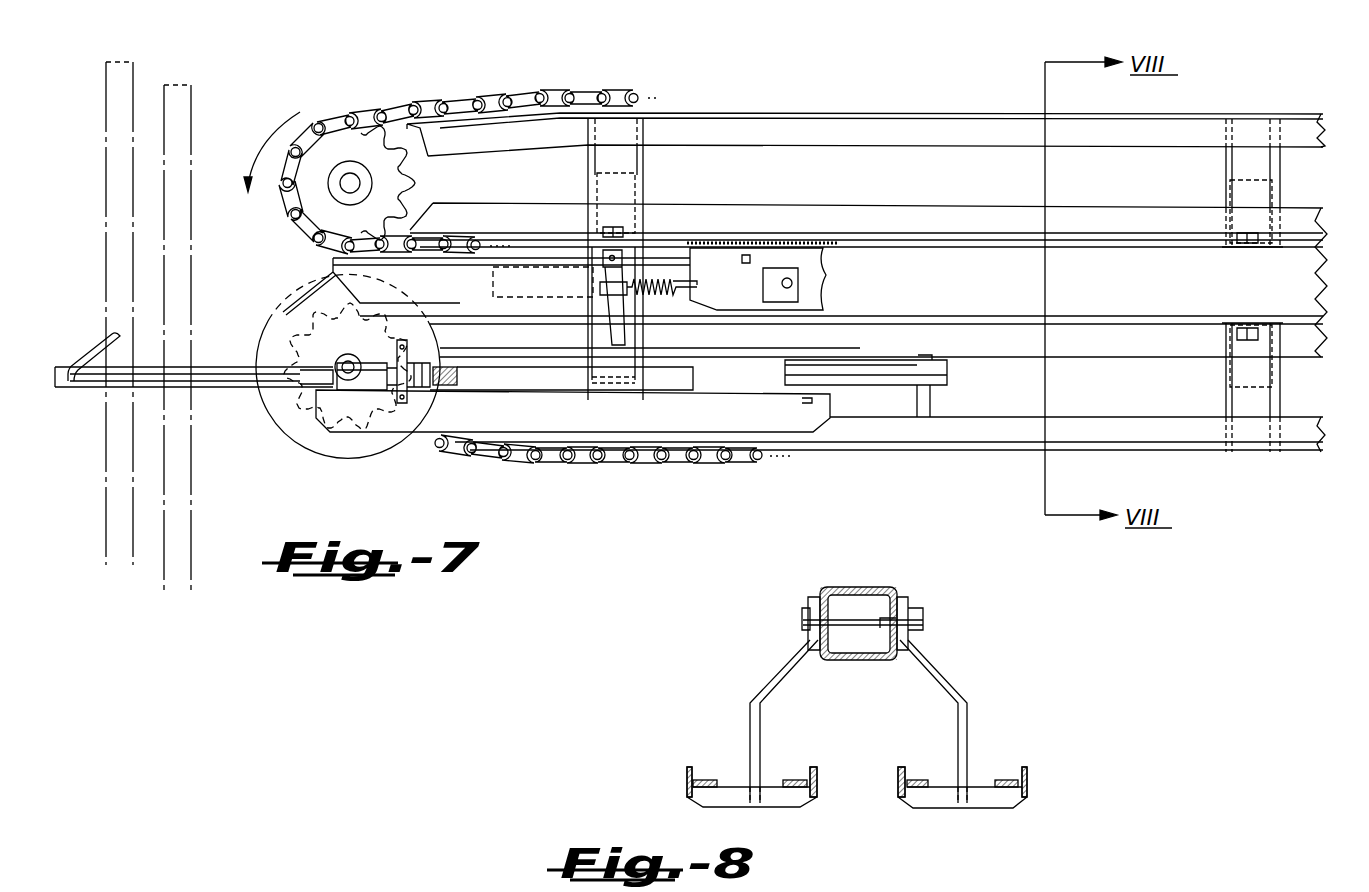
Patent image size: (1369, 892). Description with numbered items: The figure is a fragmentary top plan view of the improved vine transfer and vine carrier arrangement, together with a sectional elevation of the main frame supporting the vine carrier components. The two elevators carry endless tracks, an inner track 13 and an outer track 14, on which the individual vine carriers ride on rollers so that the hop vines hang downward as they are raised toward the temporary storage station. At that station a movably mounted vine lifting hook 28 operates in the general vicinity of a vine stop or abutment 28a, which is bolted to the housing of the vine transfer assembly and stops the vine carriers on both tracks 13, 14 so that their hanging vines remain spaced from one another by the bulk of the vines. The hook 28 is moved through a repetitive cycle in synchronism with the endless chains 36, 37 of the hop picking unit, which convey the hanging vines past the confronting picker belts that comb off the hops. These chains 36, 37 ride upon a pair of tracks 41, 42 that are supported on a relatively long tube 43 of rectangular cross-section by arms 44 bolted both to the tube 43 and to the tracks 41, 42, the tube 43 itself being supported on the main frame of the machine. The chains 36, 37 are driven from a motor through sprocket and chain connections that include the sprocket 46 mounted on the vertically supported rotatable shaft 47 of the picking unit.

In FIG. 7, the inner track 13 is at (182, 474).
In FIG. 7, the outer track 14 is at (108, 518).
In FIG. 7, the vine lifting hook 28 is at (83, 355).
In FIG. 7, the vine stop or abutment 28a is at (97, 389).
In FIG. 7, the endless chain 36 is at (490, 459).
In FIG. 7, the endless chain 37 is at (437, 88).
In FIG. 8, the track 41 is at (707, 776).
In FIG. 8, the track 42 is at (920, 776).
In FIG. 8, the tube 43 is at (845, 588).
In FIG. 8, the arms 44 is at (790, 665).
In FIG. 7, the sprocket 46 is at (300, 450).
In FIG. 7, the rotatable shaft 47 is at (330, 360).